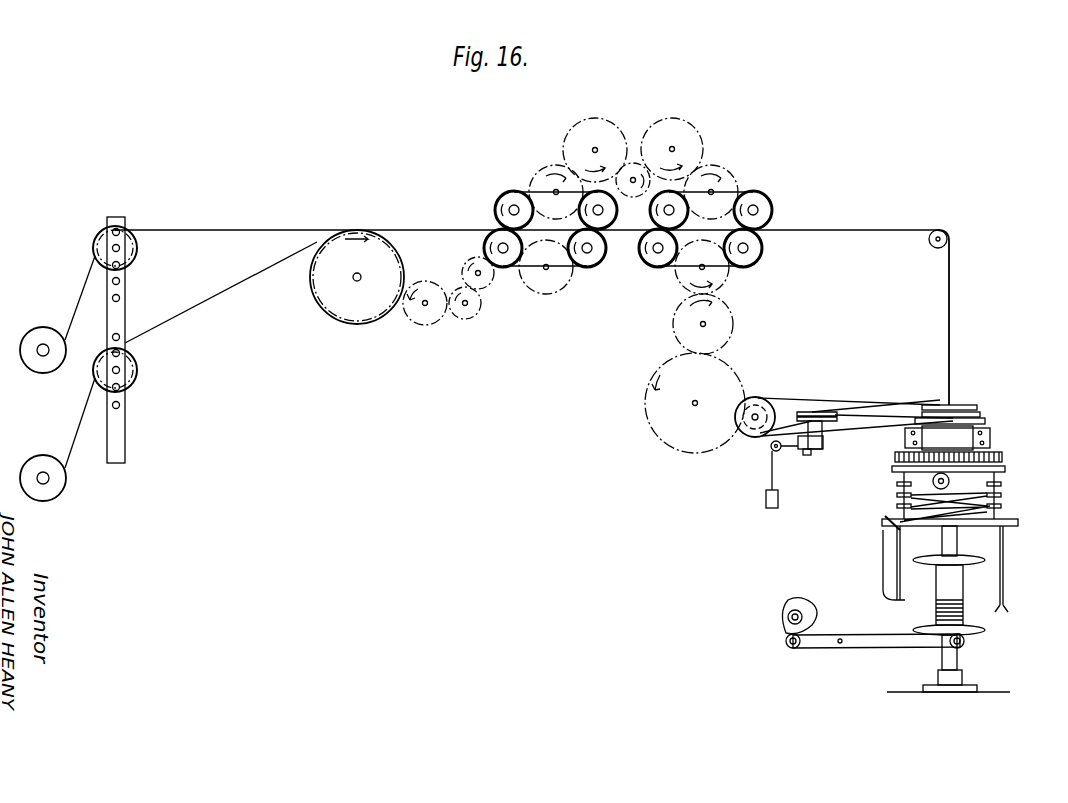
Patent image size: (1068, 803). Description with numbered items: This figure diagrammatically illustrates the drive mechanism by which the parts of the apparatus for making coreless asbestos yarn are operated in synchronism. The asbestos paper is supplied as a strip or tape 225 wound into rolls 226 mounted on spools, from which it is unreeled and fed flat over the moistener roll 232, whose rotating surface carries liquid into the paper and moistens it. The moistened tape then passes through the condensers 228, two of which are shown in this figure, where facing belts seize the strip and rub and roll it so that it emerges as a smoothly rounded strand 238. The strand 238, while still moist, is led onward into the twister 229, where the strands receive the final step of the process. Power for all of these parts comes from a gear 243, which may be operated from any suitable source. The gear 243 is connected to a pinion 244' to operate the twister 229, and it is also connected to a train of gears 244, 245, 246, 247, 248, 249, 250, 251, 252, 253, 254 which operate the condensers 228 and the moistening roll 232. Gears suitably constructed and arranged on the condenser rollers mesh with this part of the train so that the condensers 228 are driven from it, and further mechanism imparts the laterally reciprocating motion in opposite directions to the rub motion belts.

The strip or tape 225 is at (202, 228).
The rolls 226 is at (43, 327).
The condenser 228 is at (492, 192).
The twister 229 is at (863, 520).
The moistener roll 232 is at (325, 294).
The strand 238 is at (953, 318).
The gear 243 is at (660, 437).
The gear of train 244 is at (680, 325).
The pinion 244' is at (762, 398).
The gear of train 245 is at (677, 284).
The gear of train 246 is at (725, 168).
The gear of train 247 is at (688, 118).
The gear of train 248 is at (632, 162).
The gear of train 249 is at (573, 128).
The gear of train 250 is at (538, 173).
The gear of train 251 is at (528, 293).
The gear of train 252 is at (467, 262).
The gear of train 253 is at (468, 320).
The gear of train 254 is at (413, 325).